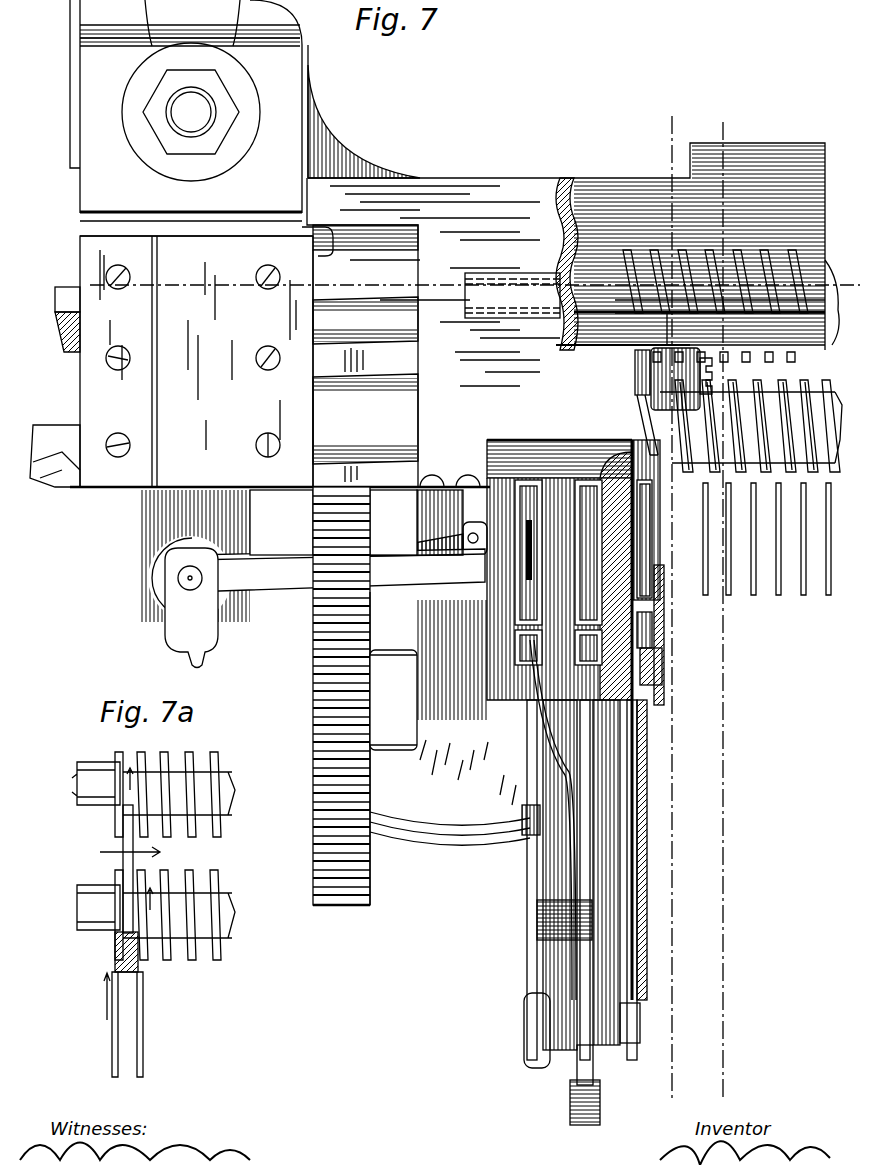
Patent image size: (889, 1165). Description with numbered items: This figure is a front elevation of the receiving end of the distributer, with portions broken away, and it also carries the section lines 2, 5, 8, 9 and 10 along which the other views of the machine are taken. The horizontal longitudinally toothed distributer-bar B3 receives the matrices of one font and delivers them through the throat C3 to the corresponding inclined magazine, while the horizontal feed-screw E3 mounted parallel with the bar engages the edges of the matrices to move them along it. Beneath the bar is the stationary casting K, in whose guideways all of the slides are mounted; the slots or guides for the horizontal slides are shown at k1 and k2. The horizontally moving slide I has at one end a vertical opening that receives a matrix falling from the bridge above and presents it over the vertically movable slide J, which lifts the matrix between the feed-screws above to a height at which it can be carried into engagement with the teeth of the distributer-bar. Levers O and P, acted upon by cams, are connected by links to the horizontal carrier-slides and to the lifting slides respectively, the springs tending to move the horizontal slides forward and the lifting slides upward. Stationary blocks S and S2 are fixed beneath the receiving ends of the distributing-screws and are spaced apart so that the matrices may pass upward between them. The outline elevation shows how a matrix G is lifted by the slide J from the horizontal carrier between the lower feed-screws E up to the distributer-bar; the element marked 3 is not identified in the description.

In FIG. 7, the section line 2— 2 is at (717, 608).
In FIG. 7, the stop pin 3 is at (752, 305).
In FIG. 7, the section line 5— 5 is at (668, 607).
In FIG. 7, the section line 8— 8 is at (95, 285).
In FIG. 7, the section line 9— 9 is at (556, 343).
In FIG. 7, the section line 10— 10 is at (487, 518).
In FIG. 7, the distributer-bar B3 is at (706, 245).
In FIG. 7, the stationary block S is at (635, 380).
In FIG. 7, the stationary block S2 is at (681, 379).
In FIG. 7, the feed-screw E3 is at (802, 384).
In FIG. 7, the throat C3 is at (767, 554).
In FIG. 7, the stationary casting K is at (520, 466).
In FIG. 7, the guide slot k1 is at (548, 584).
In FIG. 7, the guide slot k2 is at (520, 574).
In FIG. 7, the horizontally moving slide I is at (680, 513).
In FIG. 7A, the horizontally moving slide I is at (143, 1006).
In FIG. 7, the vertically movable slide J is at (592, 632).
In FIG. 7A, the vertically movable slide J is at (115, 960).
In FIG. 7, the lever O is at (655, 755).
In FIG. 7, the lever P is at (527, 990).
In FIG. 7A, the feed-screw E is at (226, 750).
In FIG. 7A, the matrix G is at (124, 840).